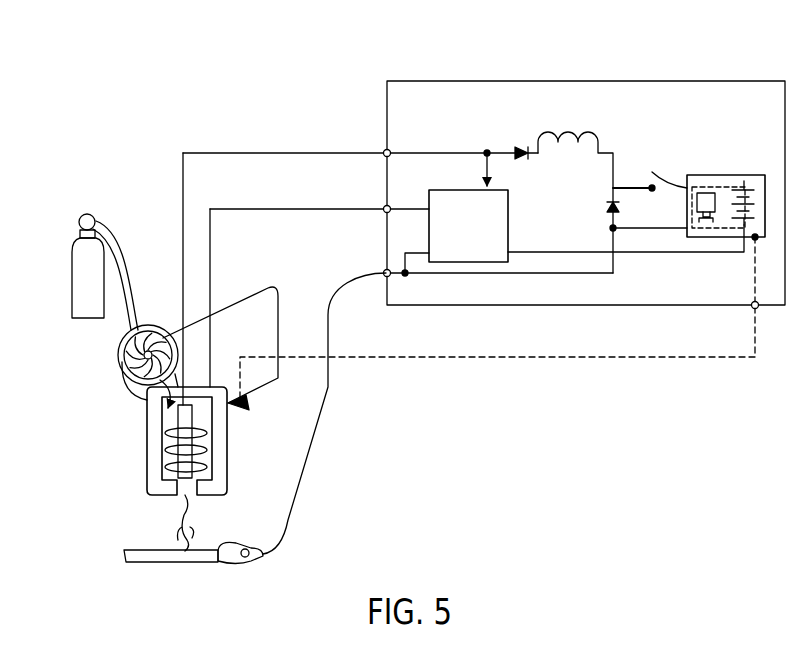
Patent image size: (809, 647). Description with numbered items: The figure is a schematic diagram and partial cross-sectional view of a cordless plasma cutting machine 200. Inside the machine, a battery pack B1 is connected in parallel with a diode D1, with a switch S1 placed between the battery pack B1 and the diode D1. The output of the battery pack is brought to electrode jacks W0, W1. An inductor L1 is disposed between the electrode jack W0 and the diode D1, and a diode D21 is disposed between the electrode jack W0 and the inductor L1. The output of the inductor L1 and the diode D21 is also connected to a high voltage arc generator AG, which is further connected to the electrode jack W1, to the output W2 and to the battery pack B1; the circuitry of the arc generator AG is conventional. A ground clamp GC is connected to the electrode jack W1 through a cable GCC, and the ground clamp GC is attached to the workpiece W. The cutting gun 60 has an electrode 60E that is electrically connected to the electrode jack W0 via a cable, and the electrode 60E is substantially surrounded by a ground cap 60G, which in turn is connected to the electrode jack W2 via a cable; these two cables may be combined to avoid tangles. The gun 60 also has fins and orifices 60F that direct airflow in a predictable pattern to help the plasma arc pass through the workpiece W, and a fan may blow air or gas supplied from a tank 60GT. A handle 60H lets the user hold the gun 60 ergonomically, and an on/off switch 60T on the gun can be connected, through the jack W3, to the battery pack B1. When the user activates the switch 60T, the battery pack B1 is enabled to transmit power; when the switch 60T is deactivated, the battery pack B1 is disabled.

The plasma cutting machine 200 is at (746, 61).
The electrode jack W0 is at (385, 151).
The electrode jack W1 is at (385, 271).
The electrode jack W2 is at (385, 207).
The electrode jack W3 is at (750, 308).
The high voltage arc generator AG is at (586, 226).
The diode D21 is at (522, 148).
The inductor L1 is at (577, 131).
The diode D1 is at (607, 209).
The switch S1 is at (661, 171).
The battery pack B1 is at (725, 176).
The cutting gun 60 is at (124, 508).
The tank 60GT is at (88, 283).
The fins and orifices 60F is at (128, 357).
The handle 60H is at (255, 303).
The on/off switch 60T is at (247, 406).
The ground cap 60G is at (214, 436).
The electrode 60E is at (190, 452).
The workpiece W is at (190, 566).
The ground clamp GC is at (255, 564).
The cable GCC is at (291, 518).